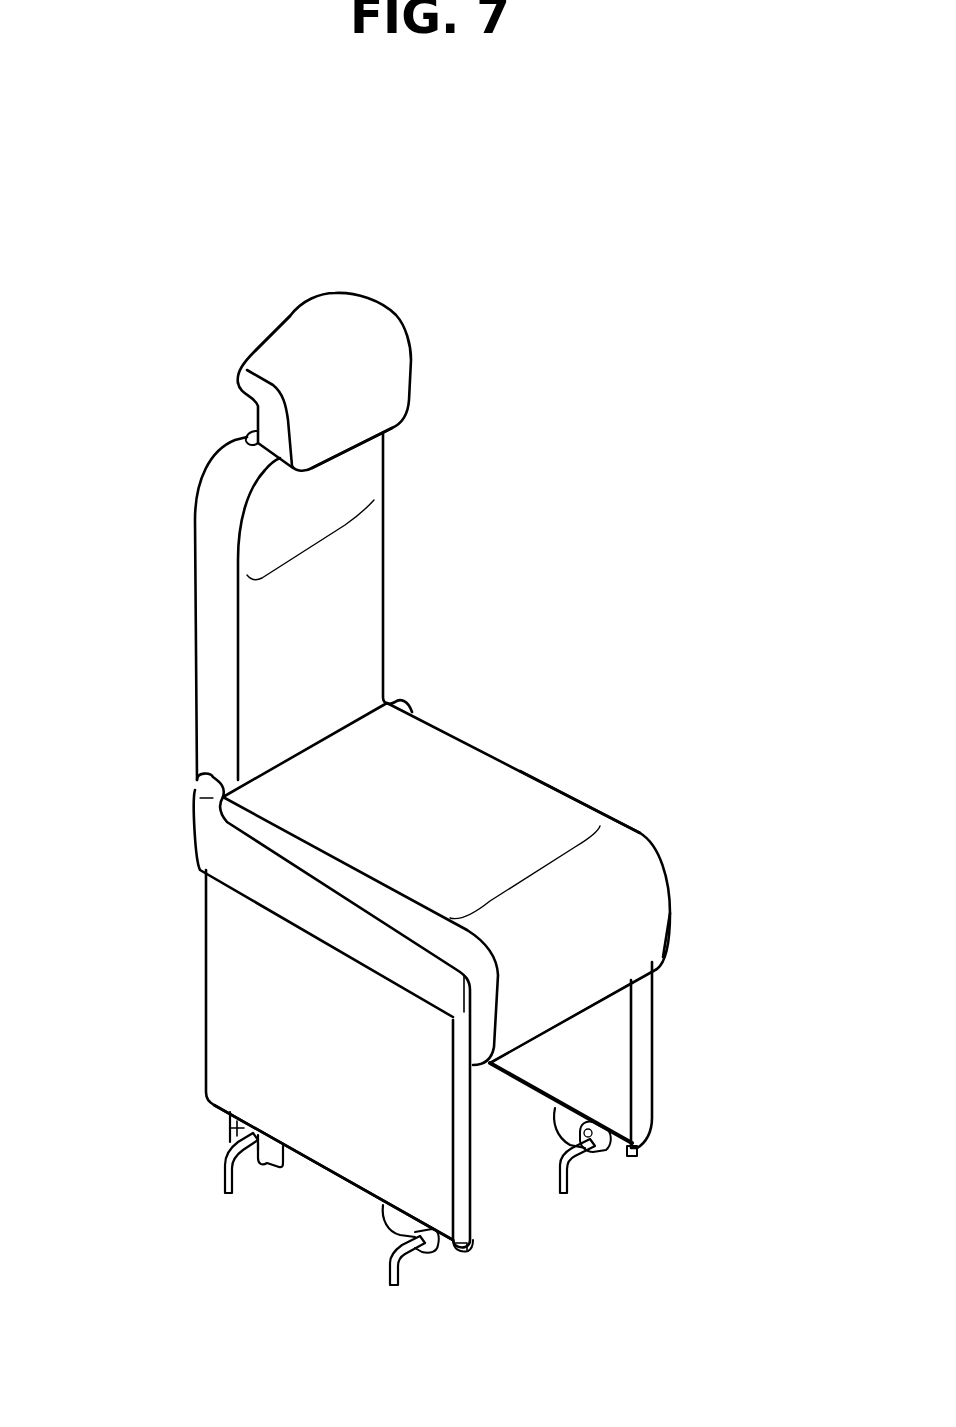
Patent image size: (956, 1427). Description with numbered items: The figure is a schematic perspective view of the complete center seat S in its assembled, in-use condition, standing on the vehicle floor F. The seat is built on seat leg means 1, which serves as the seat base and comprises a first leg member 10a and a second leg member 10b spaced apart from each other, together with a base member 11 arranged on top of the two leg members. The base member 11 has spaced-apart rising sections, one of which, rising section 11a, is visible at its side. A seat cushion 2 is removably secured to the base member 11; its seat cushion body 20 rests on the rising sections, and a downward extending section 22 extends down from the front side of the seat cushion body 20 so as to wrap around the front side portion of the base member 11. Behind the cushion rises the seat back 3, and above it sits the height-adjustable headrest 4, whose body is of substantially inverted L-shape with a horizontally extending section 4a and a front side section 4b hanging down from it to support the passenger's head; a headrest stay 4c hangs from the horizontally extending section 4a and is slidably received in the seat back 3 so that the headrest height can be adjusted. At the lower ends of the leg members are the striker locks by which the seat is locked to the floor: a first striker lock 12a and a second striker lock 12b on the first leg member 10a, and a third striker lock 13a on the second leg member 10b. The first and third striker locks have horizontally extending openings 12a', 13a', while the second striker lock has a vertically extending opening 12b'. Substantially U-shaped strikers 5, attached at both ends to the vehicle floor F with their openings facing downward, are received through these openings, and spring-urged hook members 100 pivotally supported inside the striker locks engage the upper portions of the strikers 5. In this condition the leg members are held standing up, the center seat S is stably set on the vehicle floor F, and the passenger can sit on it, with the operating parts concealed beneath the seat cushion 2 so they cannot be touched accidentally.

The seat leg means 1 is at (348, 1142).
The seat cushion 2 is at (420, 773).
The seat back 3 is at (345, 608).
The headrest 4 is at (360, 322).
The horizontally extending section 4a is at (280, 330).
The front side section 4b is at (357, 405).
The headrest stay 4c is at (257, 412).
The striker 5 is at (220, 1177).
The first leg member 10a is at (241, 1045).
The second leg member 10b is at (648, 1050).
The base member 11 is at (300, 925).
The rising section 11a is at (257, 883).
The first striker lock 12a is at (375, 1269).
The horizontally extending opening 12a' is at (486, 1272).
The second striker lock 12b is at (183, 1137).
The vertically extending opening 12b' is at (261, 1205).
The third striker lock 13a is at (539, 1158).
The horizontally extending opening 13a' is at (659, 1185).
The seat cushion body 20 is at (565, 820).
The downward extending section 22 is at (617, 947).
The hook member 100 is at (610, 1127).
The center seat S is at (513, 742).
The vehicle floor F is at (520, 1147).